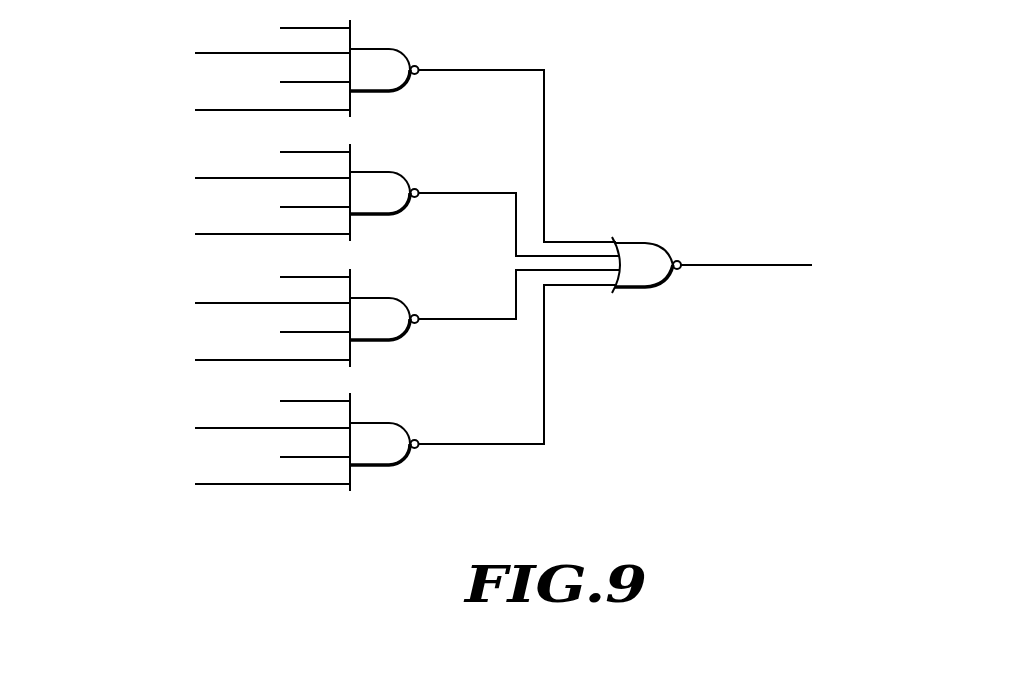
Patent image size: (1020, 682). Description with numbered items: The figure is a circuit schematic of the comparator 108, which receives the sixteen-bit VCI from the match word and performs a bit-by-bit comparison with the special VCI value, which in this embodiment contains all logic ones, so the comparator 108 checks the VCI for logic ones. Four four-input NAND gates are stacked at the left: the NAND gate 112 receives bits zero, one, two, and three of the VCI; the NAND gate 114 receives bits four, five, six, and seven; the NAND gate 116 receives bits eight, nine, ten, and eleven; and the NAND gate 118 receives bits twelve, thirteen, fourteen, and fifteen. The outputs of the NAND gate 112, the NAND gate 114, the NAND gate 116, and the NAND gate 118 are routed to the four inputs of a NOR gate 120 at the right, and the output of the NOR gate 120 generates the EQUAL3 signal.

The comparator 108 is at (449, 272).
The NAND gate 112 is at (386, 93).
The NAND gate 114 is at (386, 216).
The NAND gate 116 is at (386, 342).
The NAND gate 118 is at (386, 467).
The NOR gate 120 is at (656, 289).